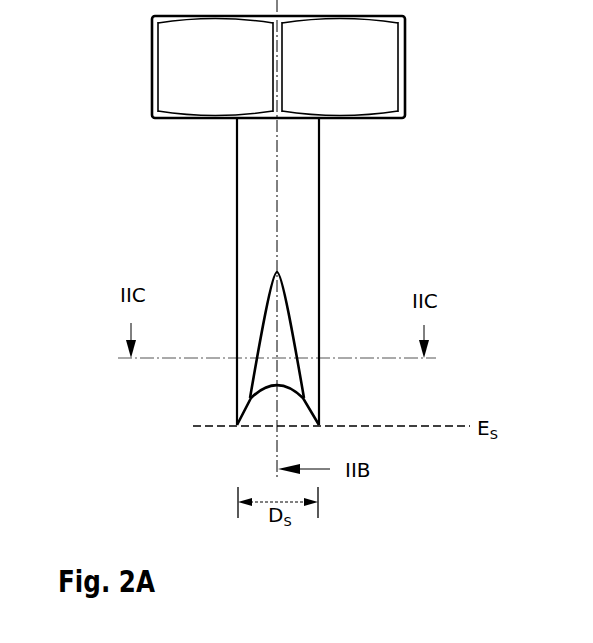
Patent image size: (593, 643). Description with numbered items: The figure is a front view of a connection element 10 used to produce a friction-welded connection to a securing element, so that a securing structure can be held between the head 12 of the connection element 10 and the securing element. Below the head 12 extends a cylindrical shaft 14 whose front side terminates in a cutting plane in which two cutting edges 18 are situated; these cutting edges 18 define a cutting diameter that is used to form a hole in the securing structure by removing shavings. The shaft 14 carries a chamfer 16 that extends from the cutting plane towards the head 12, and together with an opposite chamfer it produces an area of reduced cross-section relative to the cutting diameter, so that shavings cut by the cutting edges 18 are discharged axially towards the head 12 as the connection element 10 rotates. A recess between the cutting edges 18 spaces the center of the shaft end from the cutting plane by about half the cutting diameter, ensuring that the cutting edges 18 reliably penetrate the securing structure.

The connection element 10 is at (352, 199).
The head 12 is at (367, 77).
The cylindrical shaft 14 is at (190, 194).
The chamfer 16 is at (280, 360).
The cutting edges 18 is at (322, 424).